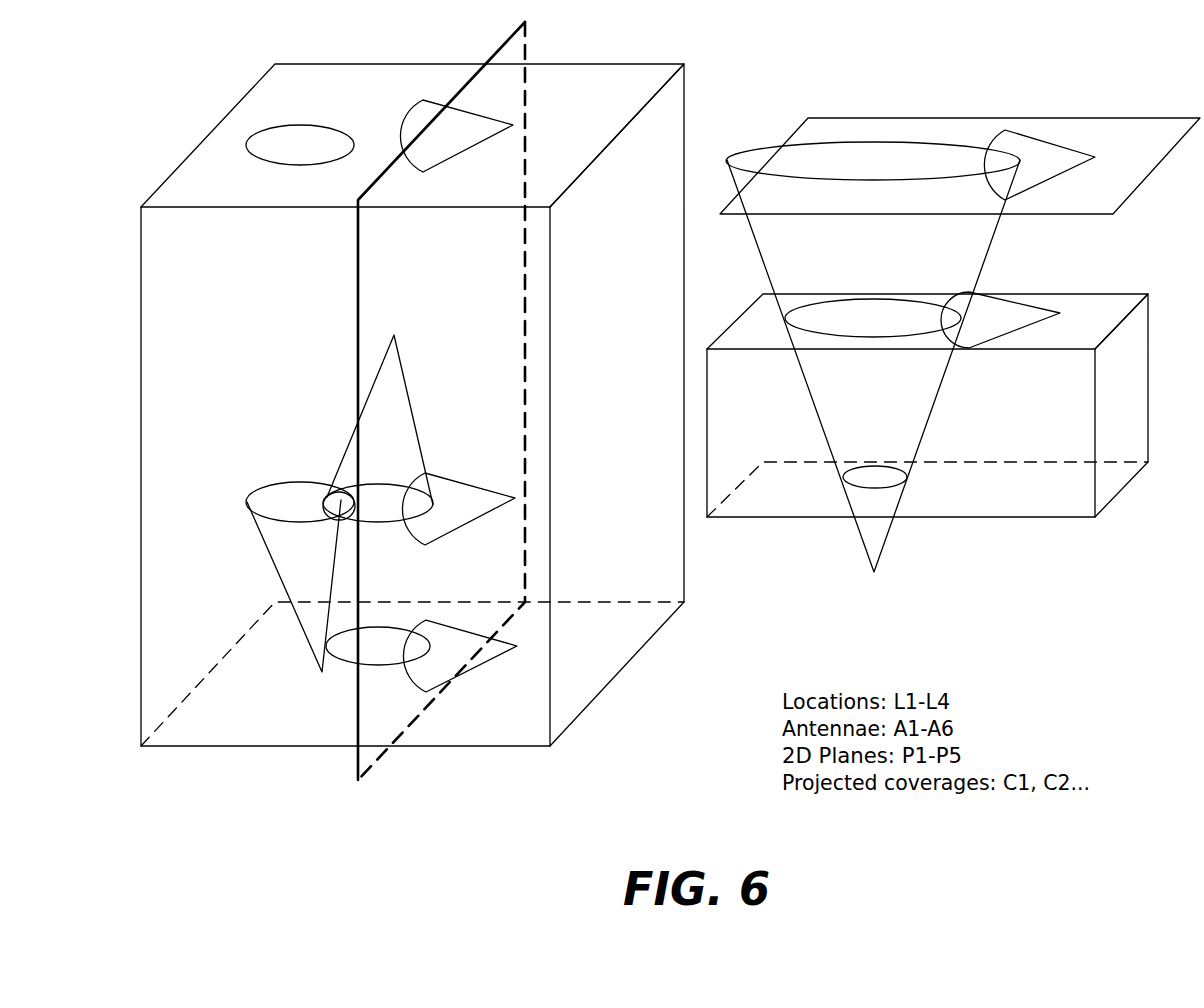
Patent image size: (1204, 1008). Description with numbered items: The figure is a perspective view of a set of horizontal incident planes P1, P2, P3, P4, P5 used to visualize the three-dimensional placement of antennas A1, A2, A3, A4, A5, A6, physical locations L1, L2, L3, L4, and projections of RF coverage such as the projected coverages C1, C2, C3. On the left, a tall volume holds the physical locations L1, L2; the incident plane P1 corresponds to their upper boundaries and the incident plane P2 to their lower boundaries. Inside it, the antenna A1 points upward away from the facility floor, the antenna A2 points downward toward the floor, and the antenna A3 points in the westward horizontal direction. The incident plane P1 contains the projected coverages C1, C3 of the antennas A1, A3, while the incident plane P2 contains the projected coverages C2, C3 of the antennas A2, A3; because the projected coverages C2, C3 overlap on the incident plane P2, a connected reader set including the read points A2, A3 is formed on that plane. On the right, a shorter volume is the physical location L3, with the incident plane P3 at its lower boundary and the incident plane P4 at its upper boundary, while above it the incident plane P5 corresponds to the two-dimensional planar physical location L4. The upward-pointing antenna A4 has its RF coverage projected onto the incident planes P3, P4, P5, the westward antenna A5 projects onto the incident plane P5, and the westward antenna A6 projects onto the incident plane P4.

The antenna A1 is at (300, 597).
The antenna A2 is at (378, 408).
The antenna A3 is at (458, 509).
The antenna A4 is at (873, 378).
The antenna A5 is at (1058, 165).
The antenna A6 is at (1017, 320).
The projected coverage C1 is at (300, 145).
The projected coverage C2 is at (378, 646).
The projected coverage C3 is at (458, 396).
The incident plane P1 is at (542, 147).
The incident plane P2 is at (567, 658).
The incident plane P3 is at (1107, 488).
The incident plane P4 is at (1112, 313).
The incident plane P5 is at (1093, 192).
The physical location L1 is at (255, 747).
The physical location L2 is at (457, 747).
The physical location L3 is at (997, 517).
The physical location L4 is at (995, 117).